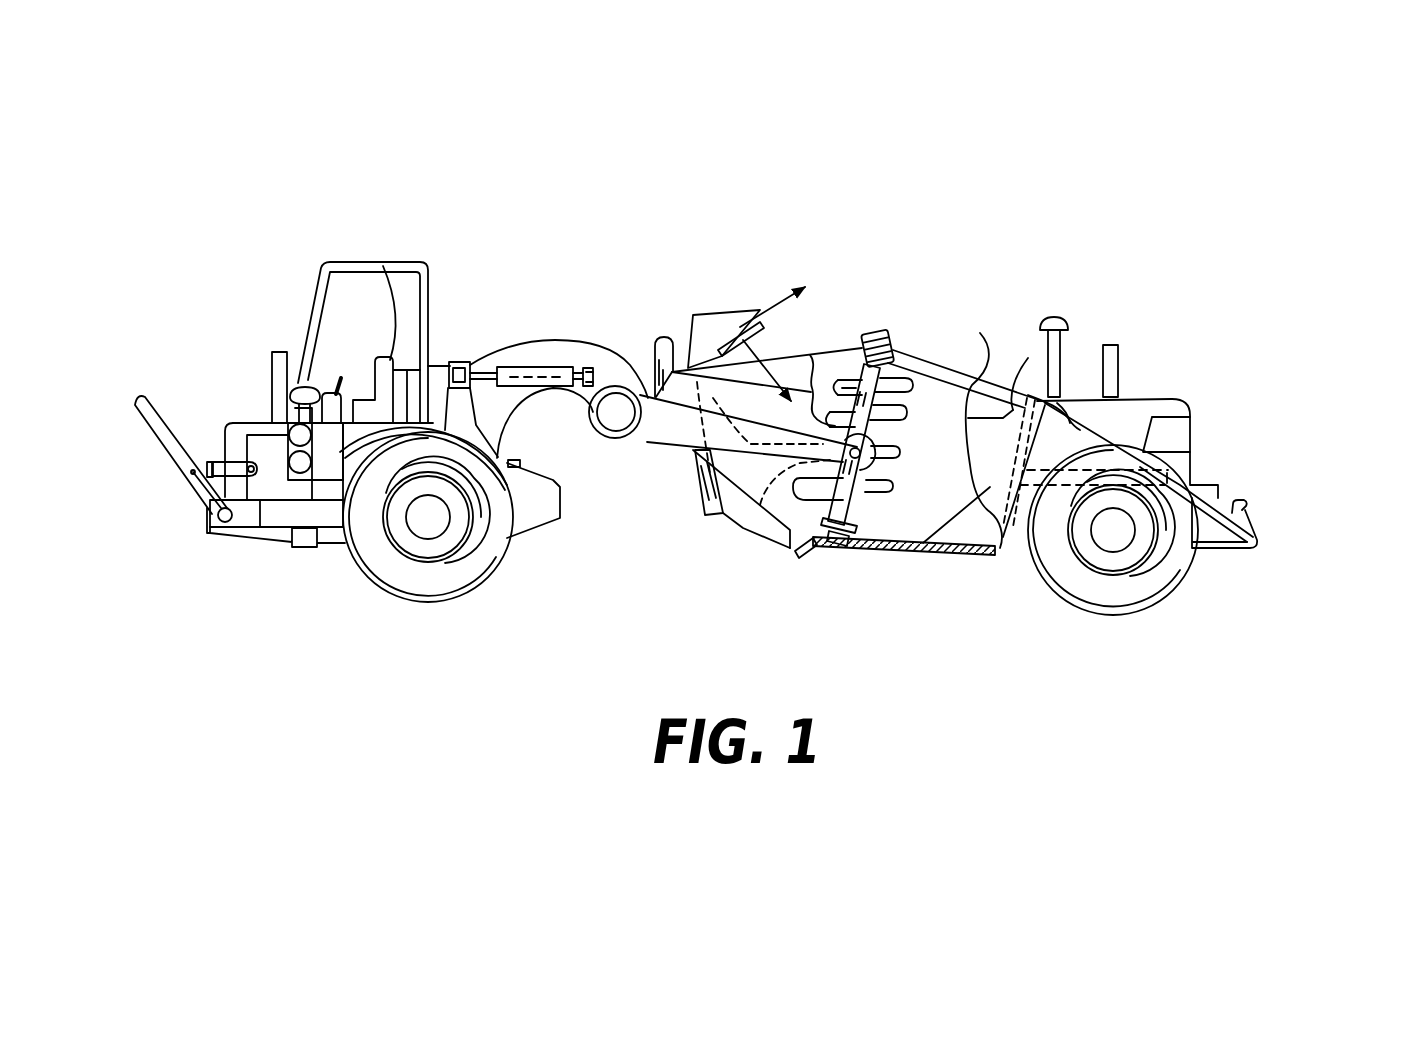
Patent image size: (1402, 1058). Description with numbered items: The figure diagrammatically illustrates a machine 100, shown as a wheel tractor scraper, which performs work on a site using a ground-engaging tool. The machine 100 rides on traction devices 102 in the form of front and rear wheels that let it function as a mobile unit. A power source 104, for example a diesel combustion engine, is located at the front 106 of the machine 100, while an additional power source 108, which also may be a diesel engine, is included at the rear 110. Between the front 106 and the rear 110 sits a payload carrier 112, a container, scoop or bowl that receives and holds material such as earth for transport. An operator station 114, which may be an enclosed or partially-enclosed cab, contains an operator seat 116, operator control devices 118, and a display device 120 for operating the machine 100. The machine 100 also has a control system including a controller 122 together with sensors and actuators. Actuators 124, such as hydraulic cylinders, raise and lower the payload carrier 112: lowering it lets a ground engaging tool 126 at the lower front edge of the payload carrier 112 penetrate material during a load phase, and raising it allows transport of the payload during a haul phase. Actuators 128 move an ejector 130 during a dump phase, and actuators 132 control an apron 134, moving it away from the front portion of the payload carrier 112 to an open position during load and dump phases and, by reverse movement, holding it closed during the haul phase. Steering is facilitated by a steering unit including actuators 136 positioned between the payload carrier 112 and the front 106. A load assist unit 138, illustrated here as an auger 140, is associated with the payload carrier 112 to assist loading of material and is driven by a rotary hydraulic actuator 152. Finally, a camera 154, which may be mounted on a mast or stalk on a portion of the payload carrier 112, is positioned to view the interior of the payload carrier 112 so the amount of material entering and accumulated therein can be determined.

The machine 100 is at (626, 268).
The traction devices 102 is at (428, 602).
The power source 104 is at (235, 420).
The front 106 is at (175, 525).
The additional power source 108 is at (1157, 397).
The rear 110 is at (1278, 530).
The payload carrier 112 is at (983, 383).
The operator station 114 is at (464, 281).
The operator seat 116 is at (386, 266).
The operator control devices 118 is at (338, 383).
The display device 120 is at (320, 352).
The controller 122 is at (407, 368).
The actuators 124 is at (654, 343).
The ground engaging tool 126 is at (810, 558).
The actuators 128 is at (1142, 467).
The ejector 130 is at (1027, 397).
The actuators 132 is at (697, 485).
The apron 134 is at (745, 537).
The actuators 136 is at (539, 366).
The load assist unit 138 is at (846, 303).
The auger 140 is at (918, 377).
The rotary hydraulic actuator 152 is at (880, 329).
The camera 154 is at (742, 308).